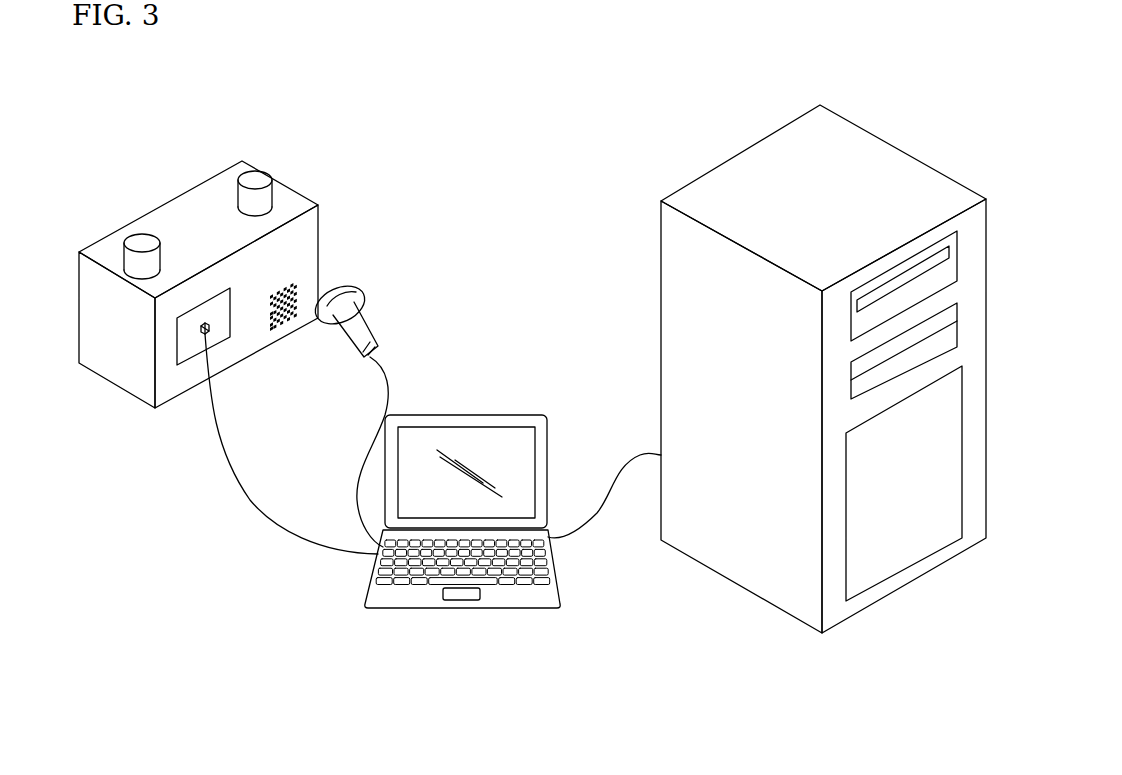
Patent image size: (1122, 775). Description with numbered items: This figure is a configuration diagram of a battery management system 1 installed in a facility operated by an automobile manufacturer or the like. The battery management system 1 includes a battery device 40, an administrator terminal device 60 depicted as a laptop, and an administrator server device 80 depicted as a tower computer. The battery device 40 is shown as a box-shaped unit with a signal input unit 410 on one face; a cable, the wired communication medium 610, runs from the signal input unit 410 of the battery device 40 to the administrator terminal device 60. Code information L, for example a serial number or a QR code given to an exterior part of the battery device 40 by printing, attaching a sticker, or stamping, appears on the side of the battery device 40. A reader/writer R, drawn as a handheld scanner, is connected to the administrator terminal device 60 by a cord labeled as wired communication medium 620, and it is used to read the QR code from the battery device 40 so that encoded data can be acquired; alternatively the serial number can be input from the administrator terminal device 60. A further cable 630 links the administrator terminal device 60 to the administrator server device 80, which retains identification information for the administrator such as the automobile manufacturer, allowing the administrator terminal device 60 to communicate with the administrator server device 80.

The battery management system 1 is at (634, 86).
The battery device 40 is at (257, 168).
The signal input unit 410 is at (210, 300).
The code information L is at (285, 285).
The reader/writer R is at (343, 287).
The administrator terminal device 60 is at (502, 417).
The administrator server device 80 is at (896, 151).
The wired communication medium 610 is at (287, 530).
The wired communication medium 620 is at (395, 382).
The cable 630 is at (597, 515).